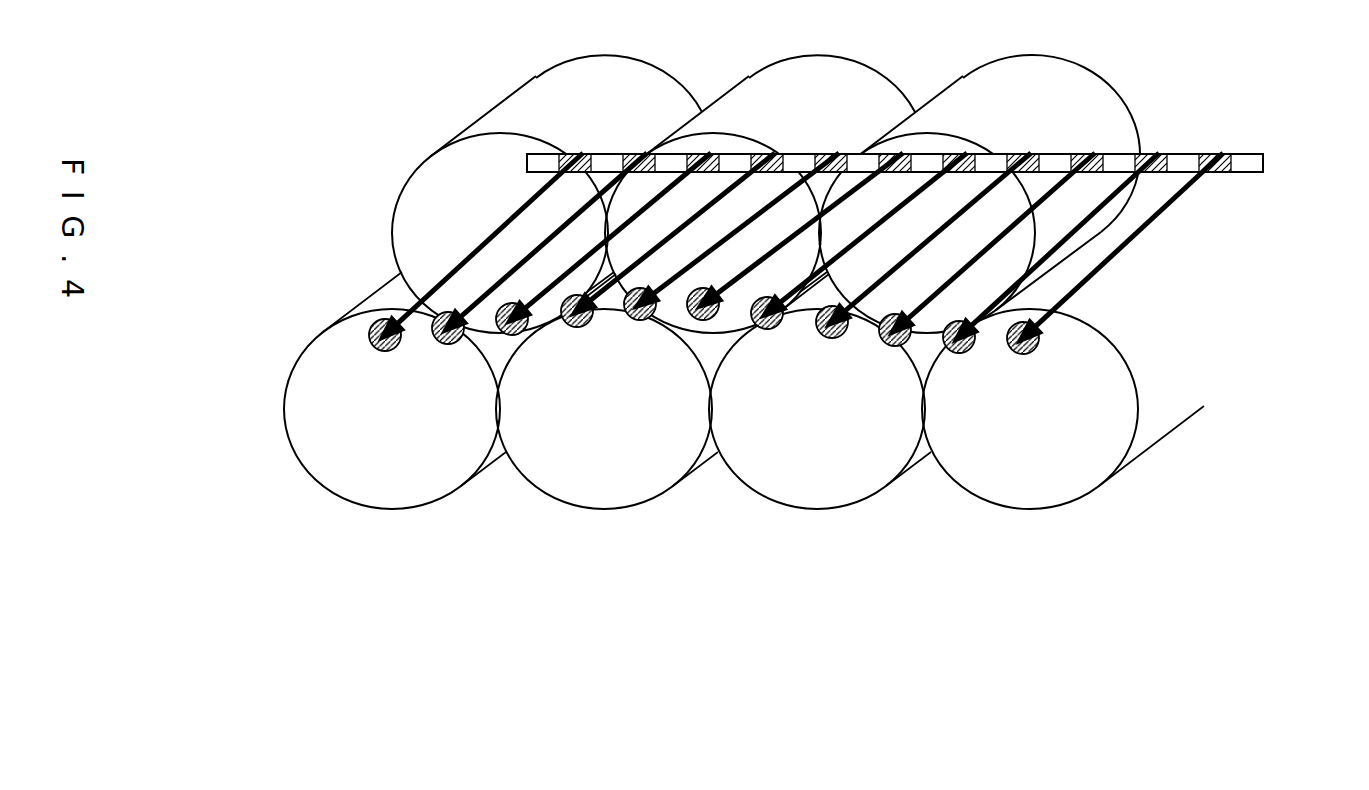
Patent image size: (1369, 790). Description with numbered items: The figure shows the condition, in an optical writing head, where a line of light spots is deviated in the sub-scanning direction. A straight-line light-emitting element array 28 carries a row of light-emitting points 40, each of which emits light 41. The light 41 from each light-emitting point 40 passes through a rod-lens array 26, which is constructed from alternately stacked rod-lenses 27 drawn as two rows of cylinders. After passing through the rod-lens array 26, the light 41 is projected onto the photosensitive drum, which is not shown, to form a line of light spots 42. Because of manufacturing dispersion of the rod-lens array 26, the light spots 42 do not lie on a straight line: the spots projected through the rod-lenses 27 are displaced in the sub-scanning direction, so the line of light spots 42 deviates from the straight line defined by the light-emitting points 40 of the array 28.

The rod-lens array 26 is at (320, 248).
The rod-lens 27 is at (290, 413).
The straight-line light-emitting element array 28 is at (948, 105).
The light-emitting point 40 is at (1210, 154).
The light 41 is at (1118, 252).
The light spot 42 is at (1040, 344).